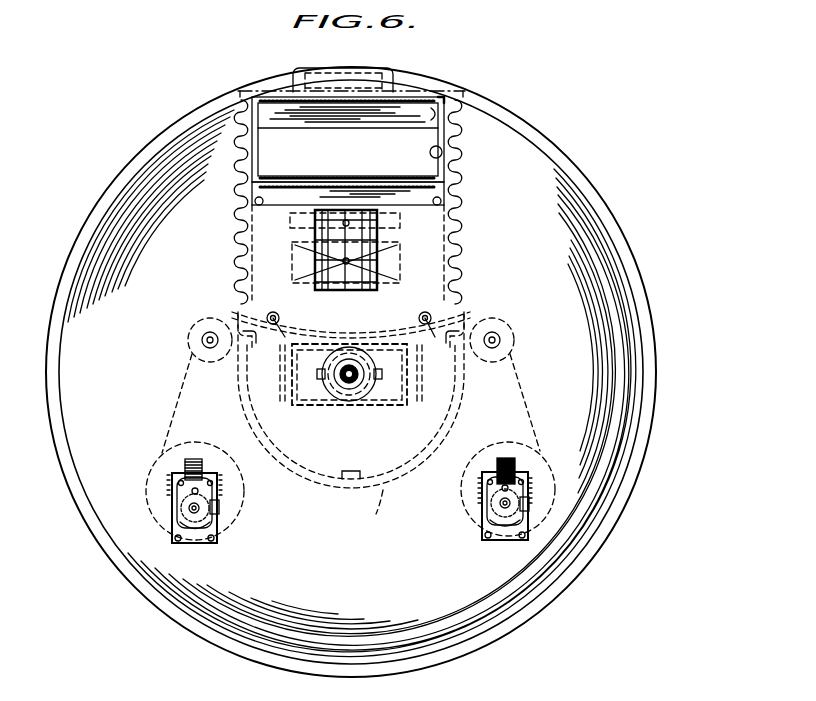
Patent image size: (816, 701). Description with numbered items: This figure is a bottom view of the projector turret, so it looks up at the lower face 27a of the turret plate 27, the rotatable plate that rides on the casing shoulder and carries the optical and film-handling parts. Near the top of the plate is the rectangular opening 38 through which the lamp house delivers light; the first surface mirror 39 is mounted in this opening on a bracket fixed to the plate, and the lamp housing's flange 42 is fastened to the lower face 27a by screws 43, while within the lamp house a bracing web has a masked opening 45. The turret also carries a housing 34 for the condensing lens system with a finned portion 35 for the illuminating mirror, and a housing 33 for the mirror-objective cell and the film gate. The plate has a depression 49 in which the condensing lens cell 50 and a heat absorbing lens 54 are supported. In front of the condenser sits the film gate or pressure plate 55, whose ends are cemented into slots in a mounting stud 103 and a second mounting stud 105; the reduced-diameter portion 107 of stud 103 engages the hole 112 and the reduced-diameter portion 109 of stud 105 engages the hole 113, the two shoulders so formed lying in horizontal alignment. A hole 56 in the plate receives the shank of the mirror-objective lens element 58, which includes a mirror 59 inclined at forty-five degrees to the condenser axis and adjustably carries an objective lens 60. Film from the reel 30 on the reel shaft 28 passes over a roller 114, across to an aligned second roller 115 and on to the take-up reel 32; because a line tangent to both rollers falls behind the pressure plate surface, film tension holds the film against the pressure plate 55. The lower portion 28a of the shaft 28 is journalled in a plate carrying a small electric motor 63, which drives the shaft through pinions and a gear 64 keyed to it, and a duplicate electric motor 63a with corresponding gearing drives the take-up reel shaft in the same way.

The turret plate 27 is at (608, 209).
The lower face of the turret plate 27a is at (530, 604).
The reel shaft 28 is at (500, 492).
The lower portion of the reel shaft 28a is at (208, 488).
The reel 30 is at (152, 458).
The take-up reel 32 is at (532, 449).
The housing 33 is at (367, 511).
The housing 34 is at (466, 216).
The finned portion 35 is at (465, 272).
The rectangular opening 38 is at (348, 139).
The first surface mirror 39 is at (441, 97).
The flange 42 is at (264, 252).
The screws 43 is at (284, 207).
The masked opening 45 is at (464, 166).
The depression 49 is at (394, 244).
The condensing lens cell 50 is at (395, 266).
The heat absorbing lens 54 is at (402, 222).
The film gate or pressure plate 55 is at (342, 326).
The hole 56 is at (365, 407).
The mirror-objective lens element 58 is at (457, 413).
The mirror 59 is at (283, 397).
The objective lens 60 is at (343, 388).
The electric motor 63 is at (203, 519).
The electric motor 63a is at (494, 503).
The gear 64 is at (170, 494).
The mounting stud 103 is at (465, 318).
The second mounting stud 105 is at (240, 318).
The portion of reduced diameter 107 is at (436, 338).
The portion of reduced diameter 109 is at (279, 328).
The hole 112 is at (425, 311).
The hole 113 is at (274, 311).
The roller 114 is at (188, 347).
The second roller 115 is at (516, 346).